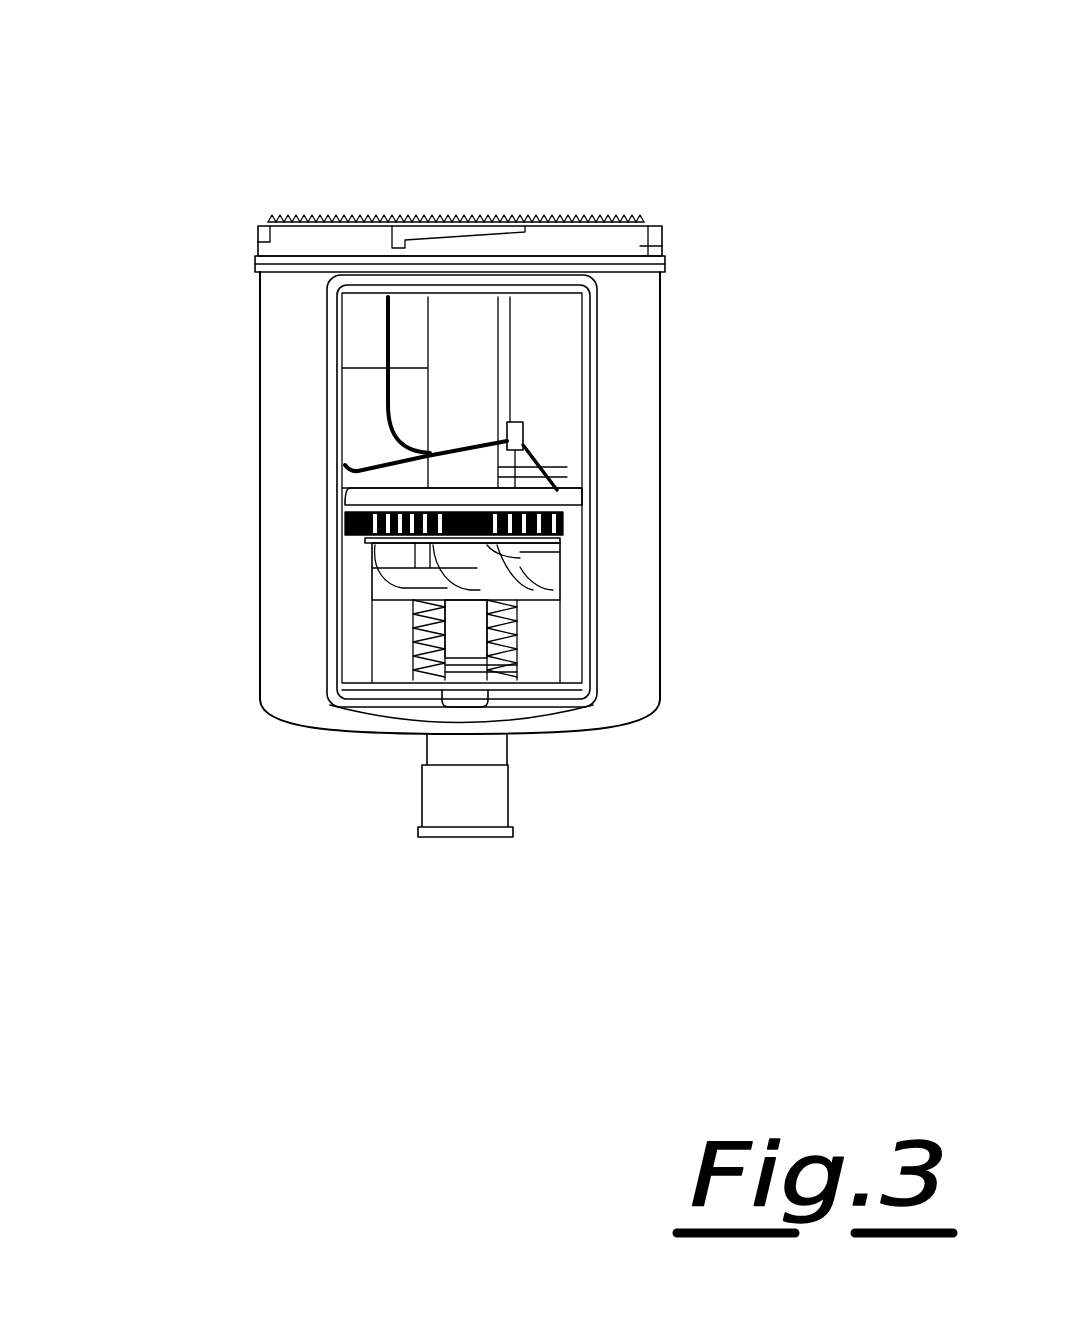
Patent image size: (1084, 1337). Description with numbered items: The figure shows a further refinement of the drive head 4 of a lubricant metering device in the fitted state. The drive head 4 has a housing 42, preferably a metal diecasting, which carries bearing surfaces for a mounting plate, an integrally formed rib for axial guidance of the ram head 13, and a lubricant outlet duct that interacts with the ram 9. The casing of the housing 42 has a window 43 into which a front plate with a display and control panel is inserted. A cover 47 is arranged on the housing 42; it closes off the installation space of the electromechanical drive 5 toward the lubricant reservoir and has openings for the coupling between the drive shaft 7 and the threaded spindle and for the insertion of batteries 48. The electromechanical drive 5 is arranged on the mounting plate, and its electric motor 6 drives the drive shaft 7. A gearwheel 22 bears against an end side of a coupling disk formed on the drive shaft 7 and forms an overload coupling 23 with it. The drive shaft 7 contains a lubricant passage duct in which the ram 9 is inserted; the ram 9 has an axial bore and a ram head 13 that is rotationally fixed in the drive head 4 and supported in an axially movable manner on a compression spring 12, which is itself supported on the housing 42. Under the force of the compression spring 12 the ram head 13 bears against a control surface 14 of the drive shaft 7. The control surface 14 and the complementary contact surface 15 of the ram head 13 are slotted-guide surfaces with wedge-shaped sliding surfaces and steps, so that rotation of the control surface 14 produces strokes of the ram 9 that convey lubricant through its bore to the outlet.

The drive head 4 is at (253, 620).
The housing 42 is at (260, 405).
The window 43 is at (548, 296).
The cover 47 is at (343, 214).
The electric motor 6 is at (357, 328).
The batteries 48 is at (567, 330).
The drive shaft 7 is at (482, 392).
The electromechanical drive 5 is at (327, 523).
The gearwheel 22 is at (533, 512).
The overload coupling 23 is at (575, 523).
The control surface 14 is at (520, 555).
The contact surface 15 is at (520, 557).
The ram 9 is at (460, 640).
The ram head 13 is at (380, 602).
The compression spring 12 is at (497, 540).